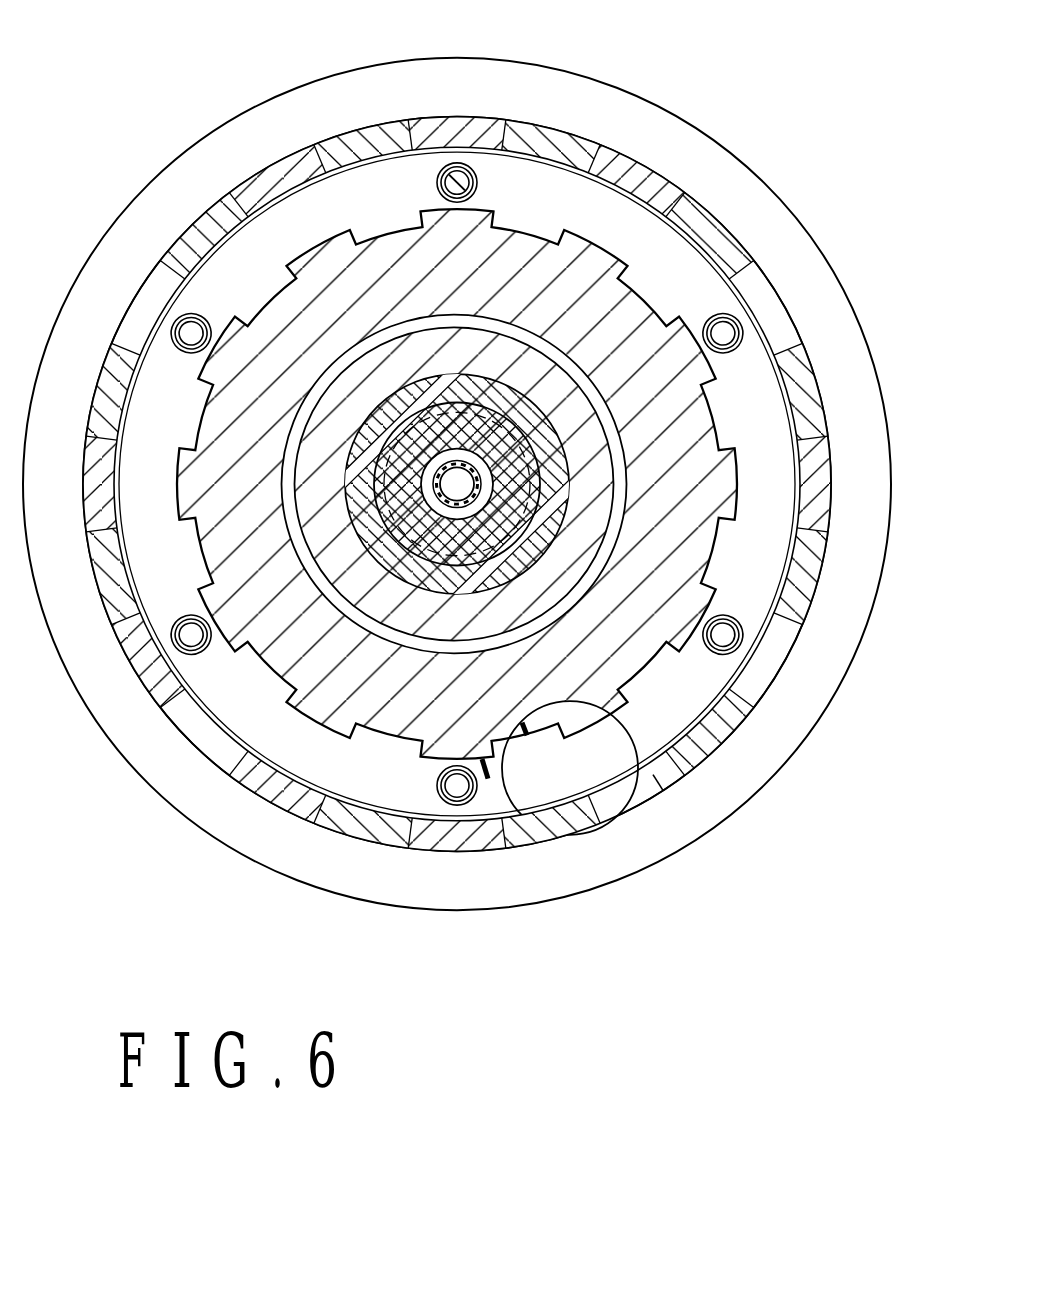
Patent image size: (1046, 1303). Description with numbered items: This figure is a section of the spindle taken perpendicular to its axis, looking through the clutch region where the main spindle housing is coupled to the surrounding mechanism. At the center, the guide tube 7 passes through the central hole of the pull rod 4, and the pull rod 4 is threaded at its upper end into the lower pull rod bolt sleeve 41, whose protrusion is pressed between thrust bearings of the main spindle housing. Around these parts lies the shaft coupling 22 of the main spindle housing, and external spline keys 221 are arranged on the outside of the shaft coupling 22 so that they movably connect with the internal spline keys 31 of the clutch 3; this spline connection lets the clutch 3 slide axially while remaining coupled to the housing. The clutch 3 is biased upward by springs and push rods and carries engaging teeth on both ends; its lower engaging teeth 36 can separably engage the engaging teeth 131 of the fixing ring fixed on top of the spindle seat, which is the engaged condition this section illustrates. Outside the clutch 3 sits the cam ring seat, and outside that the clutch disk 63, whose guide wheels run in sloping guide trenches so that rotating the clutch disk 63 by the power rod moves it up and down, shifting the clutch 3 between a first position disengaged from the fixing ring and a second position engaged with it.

The clutch disk 63 is at (365, 191).
The lower engaging teeth 36 is at (278, 258).
The engaging teeth 131 is at (714, 499).
The clutch 3 is at (599, 856).
The internal spline keys 31 is at (726, 873).
The pull rod 4 is at (425, 538).
The lower pull rod bolt sleeve 41 is at (383, 628).
The shaft coupling 22 is at (457, 652).
The external spline keys 221 is at (567, 902).
The guide tube 7 is at (355, 704).